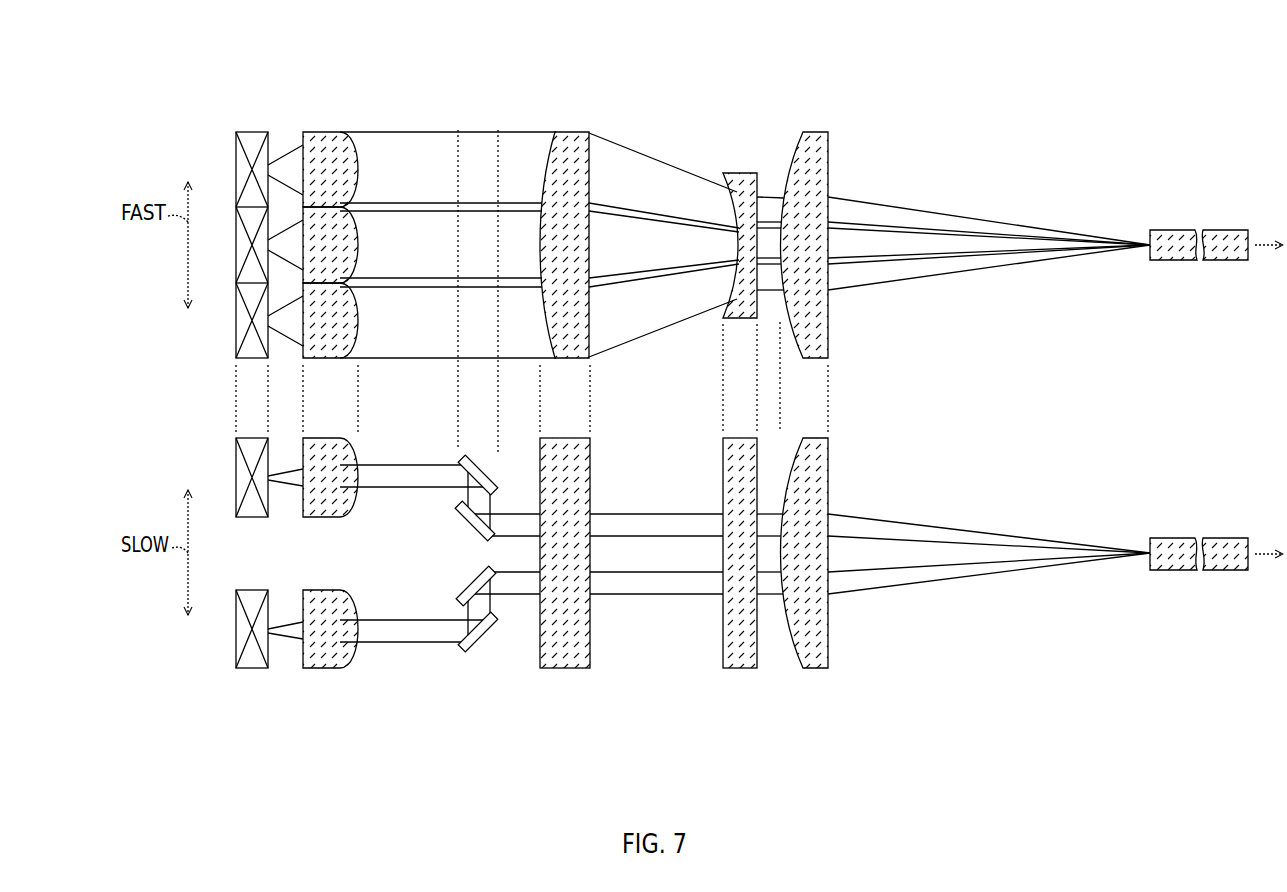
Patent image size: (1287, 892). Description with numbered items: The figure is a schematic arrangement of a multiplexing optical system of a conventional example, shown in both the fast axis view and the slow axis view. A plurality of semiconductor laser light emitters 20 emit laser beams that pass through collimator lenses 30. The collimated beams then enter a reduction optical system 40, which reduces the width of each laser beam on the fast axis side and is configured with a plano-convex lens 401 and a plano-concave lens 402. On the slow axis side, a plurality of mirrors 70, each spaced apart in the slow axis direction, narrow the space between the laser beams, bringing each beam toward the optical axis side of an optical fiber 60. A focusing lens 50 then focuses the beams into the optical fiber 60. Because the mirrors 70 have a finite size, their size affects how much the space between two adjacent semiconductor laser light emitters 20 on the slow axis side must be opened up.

The semiconductor laser light emitter 20 is at (234, 156).
The collimator lens 30 is at (318, 130).
The reduction optical system 40 is at (648, 402).
The plano-convex lens 401 is at (577, 130).
The plano-concave lens 402 is at (722, 400).
The focusing lens 50 is at (810, 131).
The optical fiber 60 is at (1170, 229).
The mirror 70 is at (465, 130).